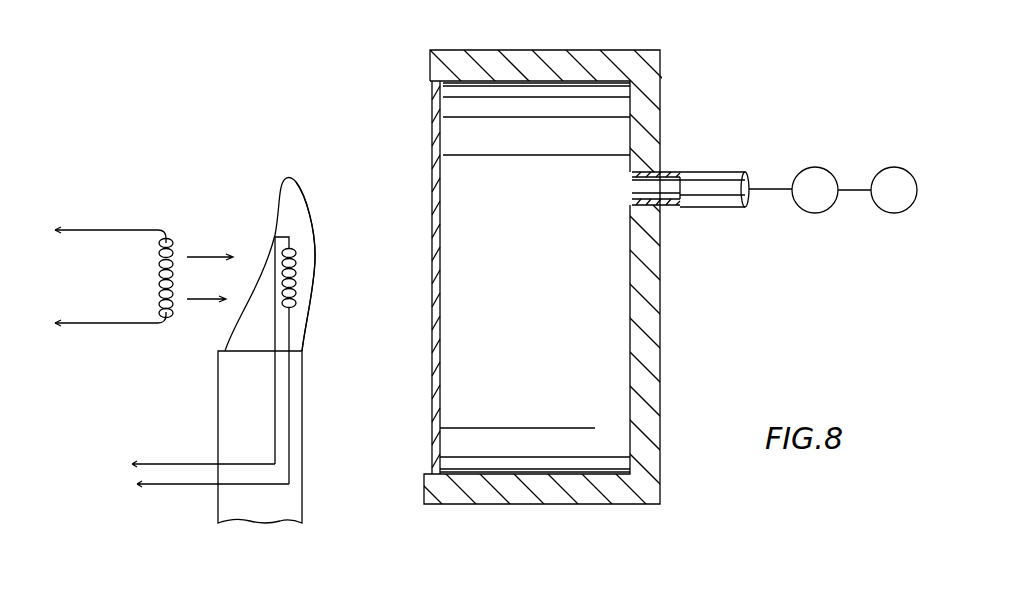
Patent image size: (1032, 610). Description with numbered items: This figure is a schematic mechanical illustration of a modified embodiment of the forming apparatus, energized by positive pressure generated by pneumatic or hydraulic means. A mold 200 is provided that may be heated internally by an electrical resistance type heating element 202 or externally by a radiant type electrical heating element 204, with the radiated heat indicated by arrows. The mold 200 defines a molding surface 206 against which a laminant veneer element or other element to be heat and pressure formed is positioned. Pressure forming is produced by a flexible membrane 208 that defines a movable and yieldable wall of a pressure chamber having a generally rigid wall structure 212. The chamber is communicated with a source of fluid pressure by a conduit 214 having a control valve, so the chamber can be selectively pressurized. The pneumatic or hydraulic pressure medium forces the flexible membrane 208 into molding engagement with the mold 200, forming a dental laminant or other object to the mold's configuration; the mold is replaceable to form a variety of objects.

The mold 200 is at (293, 183).
The electrical resistance type heating element 202 is at (292, 294).
The radiant type electrical heating element 204 is at (173, 250).
The molding surface 206 is at (312, 229).
The flexible membrane 208 is at (432, 395).
The rigid wall structure 212 is at (549, 58).
The conduit 214 is at (766, 188).